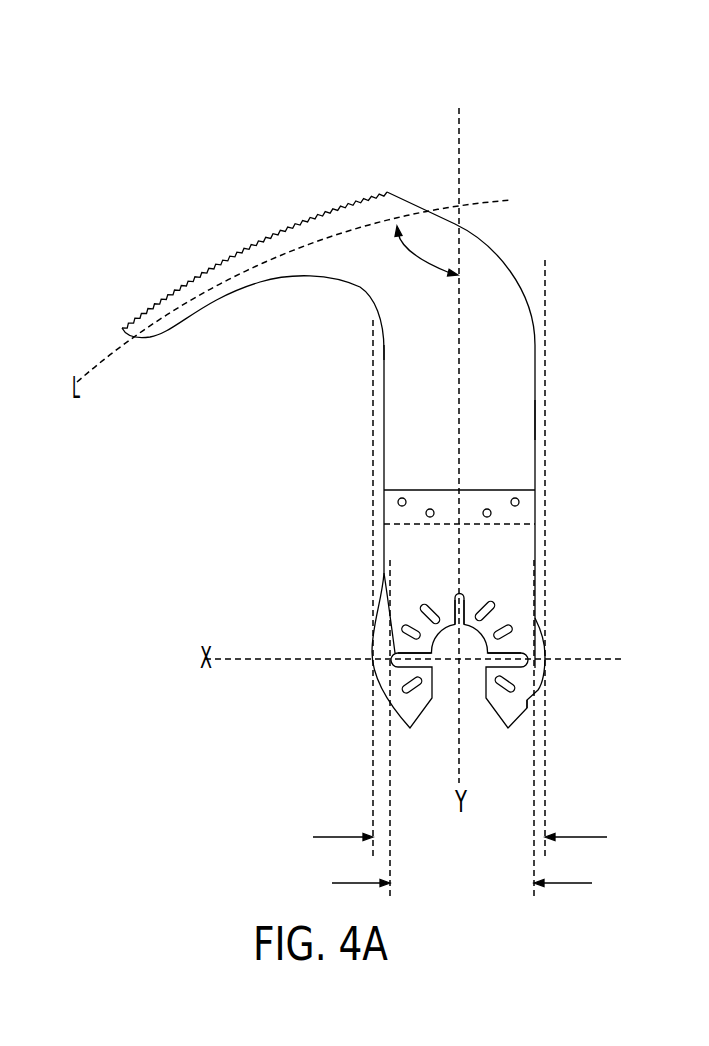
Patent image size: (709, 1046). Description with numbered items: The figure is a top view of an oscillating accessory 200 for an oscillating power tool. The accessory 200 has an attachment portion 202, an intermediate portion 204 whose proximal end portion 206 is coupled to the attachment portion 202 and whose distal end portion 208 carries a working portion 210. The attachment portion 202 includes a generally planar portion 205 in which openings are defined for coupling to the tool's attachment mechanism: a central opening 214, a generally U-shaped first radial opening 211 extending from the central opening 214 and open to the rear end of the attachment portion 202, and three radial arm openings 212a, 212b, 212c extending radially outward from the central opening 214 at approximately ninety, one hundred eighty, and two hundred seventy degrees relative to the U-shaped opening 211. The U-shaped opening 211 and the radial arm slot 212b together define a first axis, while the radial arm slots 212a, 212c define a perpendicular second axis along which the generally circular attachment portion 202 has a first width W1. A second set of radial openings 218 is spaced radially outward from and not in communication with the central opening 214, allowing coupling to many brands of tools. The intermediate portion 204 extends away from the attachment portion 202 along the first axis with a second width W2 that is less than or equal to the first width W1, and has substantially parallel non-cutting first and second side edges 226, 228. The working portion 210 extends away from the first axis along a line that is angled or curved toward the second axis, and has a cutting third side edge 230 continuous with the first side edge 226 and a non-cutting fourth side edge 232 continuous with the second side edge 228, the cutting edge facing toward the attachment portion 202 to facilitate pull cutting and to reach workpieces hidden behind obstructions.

The oscillating accessory 200 is at (385, 123).
The attachment portion 202 is at (364, 653).
The intermediate portion 204 is at (365, 407).
The generally planar portion 205 is at (516, 712).
The proximal end portion 206 is at (393, 476).
The distal end portion 208 is at (418, 208).
The working portion 210 is at (185, 242).
The U-shaped first radial opening 211 is at (435, 700).
The radial arm opening 212a is at (523, 657).
The radial arm opening 212b is at (470, 594).
The radial arm opening 212c is at (394, 654).
The central opening 214 is at (477, 680).
The radial openings 218 is at (403, 626).
The first side edge 226 is at (383, 350).
The second side edge 228 is at (536, 420).
The cutting third side edge 230 is at (207, 313).
The non-cutting fourth side edge 232 is at (277, 223).
The first width W1 is at (322, 837).
The second width W2 is at (338, 883).